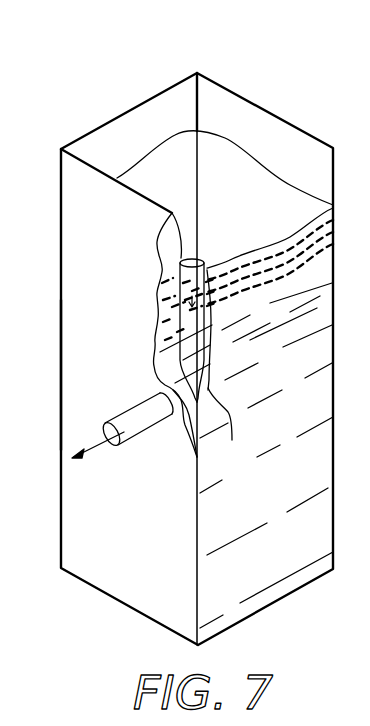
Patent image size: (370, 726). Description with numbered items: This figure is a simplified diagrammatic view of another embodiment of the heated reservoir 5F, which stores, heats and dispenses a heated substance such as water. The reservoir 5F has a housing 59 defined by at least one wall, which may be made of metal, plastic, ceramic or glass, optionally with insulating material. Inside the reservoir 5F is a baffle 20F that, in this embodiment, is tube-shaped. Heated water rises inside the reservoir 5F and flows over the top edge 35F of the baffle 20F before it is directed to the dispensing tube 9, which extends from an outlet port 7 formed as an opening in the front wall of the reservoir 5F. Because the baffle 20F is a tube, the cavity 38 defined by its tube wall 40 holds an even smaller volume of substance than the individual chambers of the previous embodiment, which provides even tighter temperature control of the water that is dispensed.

The reservoir 5F is at (46, 187).
The housing 59 is at (61, 383).
The baffle 20F is at (228, 310).
The top edge 35F is at (172, 213).
The cavity 38 is at (192, 260).
The tube wall 40 is at (210, 428).
The outlet port 7 is at (171, 418).
The dispensing tube 9 is at (122, 438).